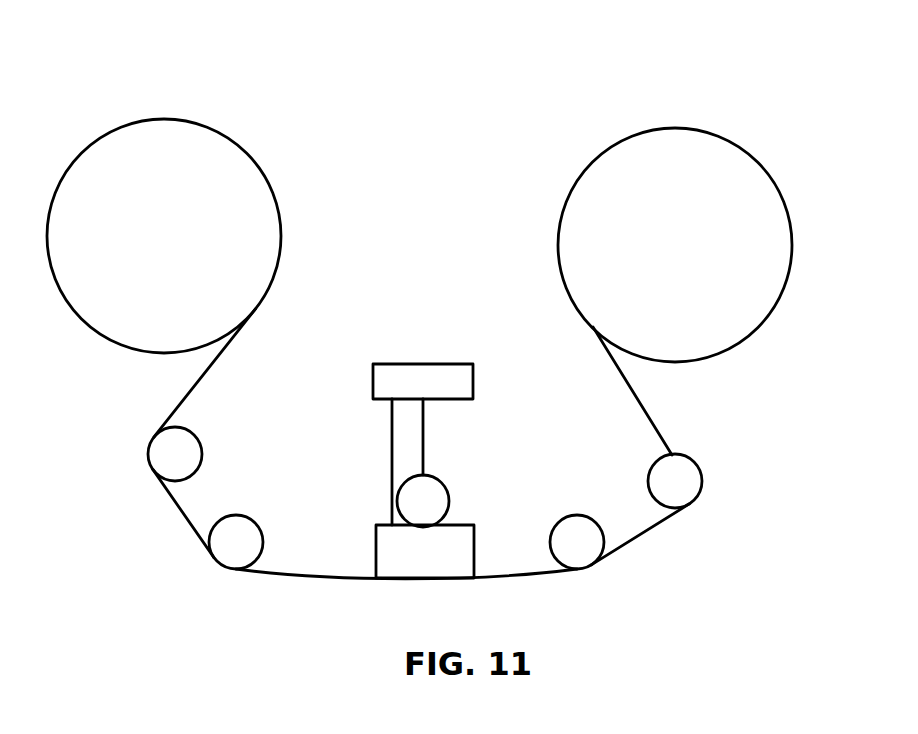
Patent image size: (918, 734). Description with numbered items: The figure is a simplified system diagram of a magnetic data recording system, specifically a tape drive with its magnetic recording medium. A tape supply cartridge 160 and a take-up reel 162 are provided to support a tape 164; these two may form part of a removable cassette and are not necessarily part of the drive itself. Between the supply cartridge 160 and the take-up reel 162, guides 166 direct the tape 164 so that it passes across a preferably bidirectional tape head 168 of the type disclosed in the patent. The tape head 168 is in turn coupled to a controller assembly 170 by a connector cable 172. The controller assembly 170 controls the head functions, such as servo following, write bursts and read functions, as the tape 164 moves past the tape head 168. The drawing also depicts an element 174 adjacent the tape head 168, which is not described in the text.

The tape supply cartridge 160 is at (163, 118).
The take-up reel 162 is at (673, 128).
The tape 164 is at (308, 575).
The guides 166 is at (202, 450).
The tape head 168 is at (474, 552).
The controller assembly 170 is at (422, 364).
The connector cable 172 is at (393, 497).
The pinch roller 174 is at (447, 477).